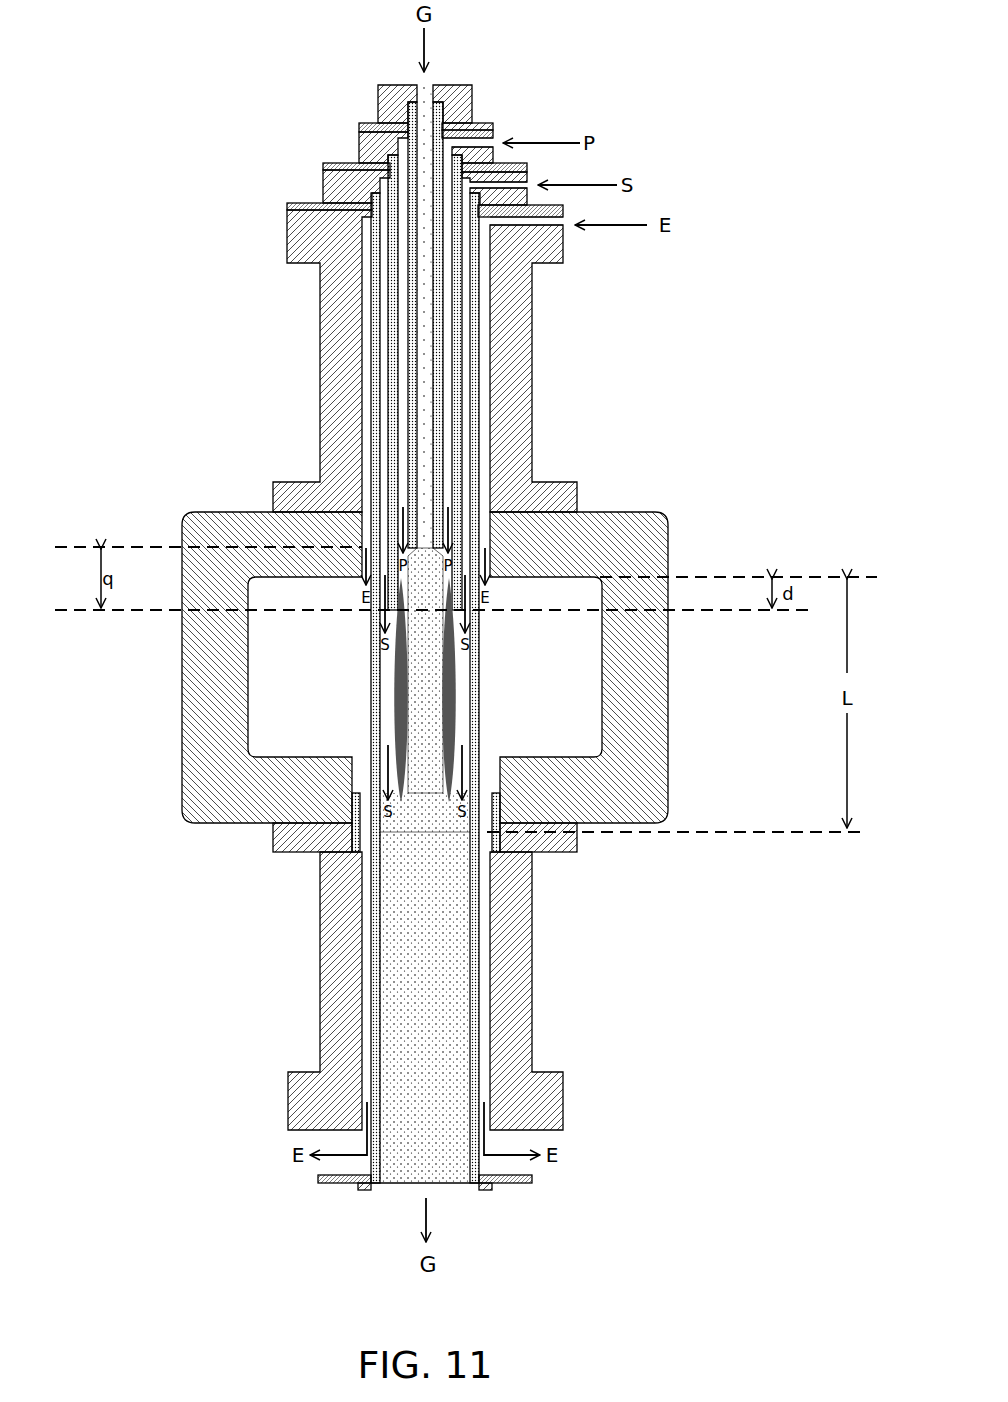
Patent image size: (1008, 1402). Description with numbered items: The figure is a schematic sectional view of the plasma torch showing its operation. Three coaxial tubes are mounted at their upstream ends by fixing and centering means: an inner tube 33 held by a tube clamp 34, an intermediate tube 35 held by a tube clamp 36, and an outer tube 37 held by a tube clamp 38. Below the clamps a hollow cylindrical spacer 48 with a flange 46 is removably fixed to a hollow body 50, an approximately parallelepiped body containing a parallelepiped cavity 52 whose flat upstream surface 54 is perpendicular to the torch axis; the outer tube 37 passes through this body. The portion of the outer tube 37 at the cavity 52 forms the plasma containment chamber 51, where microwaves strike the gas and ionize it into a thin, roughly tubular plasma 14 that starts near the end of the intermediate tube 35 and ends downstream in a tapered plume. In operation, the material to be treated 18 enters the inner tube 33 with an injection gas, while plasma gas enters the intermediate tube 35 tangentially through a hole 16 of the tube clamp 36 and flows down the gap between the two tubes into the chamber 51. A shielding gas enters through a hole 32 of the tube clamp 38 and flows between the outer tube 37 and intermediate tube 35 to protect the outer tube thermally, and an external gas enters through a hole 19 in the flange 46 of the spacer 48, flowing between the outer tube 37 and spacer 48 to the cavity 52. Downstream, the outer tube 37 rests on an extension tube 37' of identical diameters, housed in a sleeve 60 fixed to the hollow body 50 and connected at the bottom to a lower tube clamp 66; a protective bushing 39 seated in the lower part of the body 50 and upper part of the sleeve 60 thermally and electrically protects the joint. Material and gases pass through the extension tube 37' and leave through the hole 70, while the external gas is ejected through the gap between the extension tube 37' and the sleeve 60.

The plasma 14 is at (400, 740).
The hole of the tube clamp 16 is at (483, 143).
The material to be treated 18 is at (425, 252).
The hole 19 is at (538, 225).
The hole of the tube clamp 32 is at (518, 183).
The inner tube 33 is at (440, 115).
The tube clamp 34 is at (395, 107).
The intermediate tube 35 is at (457, 348).
The tube clamp 36 is at (375, 148).
The outer tube 37 is at (523, 688).
The extension tube 37' is at (519, 1017).
The tube clamp 38 is at (343, 190).
The protective bushing 39 is at (492, 843).
The flange 46 is at (293, 268).
The hollow cylindrical spacer 48 is at (335, 383).
The hollow body 50 is at (180, 682).
The plasma containment chamber 51 is at (412, 728).
The cavity 52 is at (518, 683).
The upstream surface 54 is at (299, 582).
The sleeve 60 is at (320, 985).
The lower tube clamp 66 is at (347, 1183).
The hole 70 is at (448, 1184).